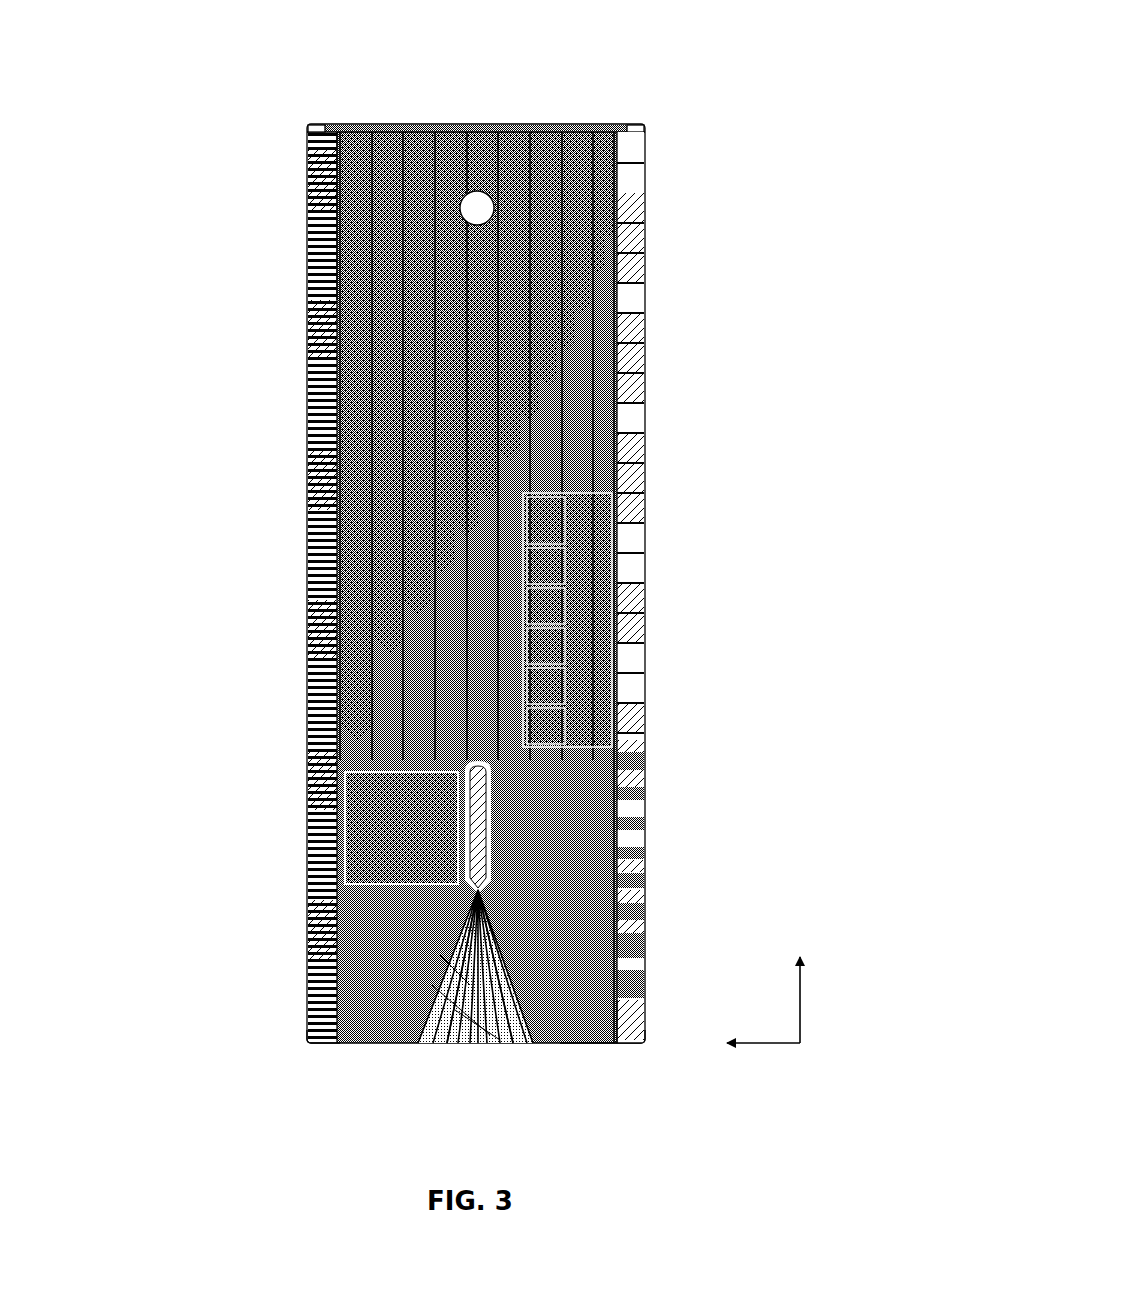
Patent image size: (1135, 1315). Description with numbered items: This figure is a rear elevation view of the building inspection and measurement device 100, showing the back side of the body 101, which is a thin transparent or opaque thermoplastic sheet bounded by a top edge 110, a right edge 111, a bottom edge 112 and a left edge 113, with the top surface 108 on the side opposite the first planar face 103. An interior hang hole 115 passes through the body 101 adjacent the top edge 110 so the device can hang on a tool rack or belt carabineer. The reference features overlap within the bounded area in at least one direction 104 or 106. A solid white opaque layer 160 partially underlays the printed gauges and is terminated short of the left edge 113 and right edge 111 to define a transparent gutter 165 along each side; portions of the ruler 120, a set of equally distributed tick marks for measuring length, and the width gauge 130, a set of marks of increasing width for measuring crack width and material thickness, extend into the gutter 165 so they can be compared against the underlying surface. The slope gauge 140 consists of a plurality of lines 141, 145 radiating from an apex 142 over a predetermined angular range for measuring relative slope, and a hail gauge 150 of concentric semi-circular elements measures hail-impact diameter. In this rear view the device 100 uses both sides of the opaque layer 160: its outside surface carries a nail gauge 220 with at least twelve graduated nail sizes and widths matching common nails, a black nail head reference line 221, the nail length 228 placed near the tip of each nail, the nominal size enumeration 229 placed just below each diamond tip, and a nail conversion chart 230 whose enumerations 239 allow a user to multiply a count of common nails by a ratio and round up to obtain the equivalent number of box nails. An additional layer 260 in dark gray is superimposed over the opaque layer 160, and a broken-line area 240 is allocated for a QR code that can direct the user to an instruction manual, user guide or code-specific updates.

The building inspection and measurement device 100 is at (650, 80).
The body 101 is at (652, 235).
The first planar face 103 is at (358, 166).
The direction 104 is at (758, 1043).
The direction 106 is at (800, 1000).
The top surface 108 is at (320, 120).
The top edge 110 is at (484, 123).
The right edge 111 is at (648, 800).
The bottom edge 112 is at (340, 1045).
The left edge 113 is at (310, 1000).
The hang hole 115 is at (477, 215).
The ruler 120 is at (298, 508).
The width gauge 130 is at (658, 850).
The slope gauge 140 is at (478, 1048).
The lines 141 is at (463, 1043).
The apex 142 is at (482, 893).
The lines 145 is at (505, 1043).
The hail gauge 150 is at (300, 636).
The opaque layer 160 is at (618, 1043).
The transparent gutter 165 is at (330, 872).
The nail gauge 220 is at (445, 420).
The nail head reference line 221 is at (645, 130).
The nail length 228 is at (445, 560).
The nominal nail size enumeration 229 is at (405, 673).
The nail conversion chart 230 is at (600, 622).
The conversion chart enumeration 239 is at (598, 685).
The QR code area 240 is at (400, 830).
The additional layer 260 is at (595, 392).